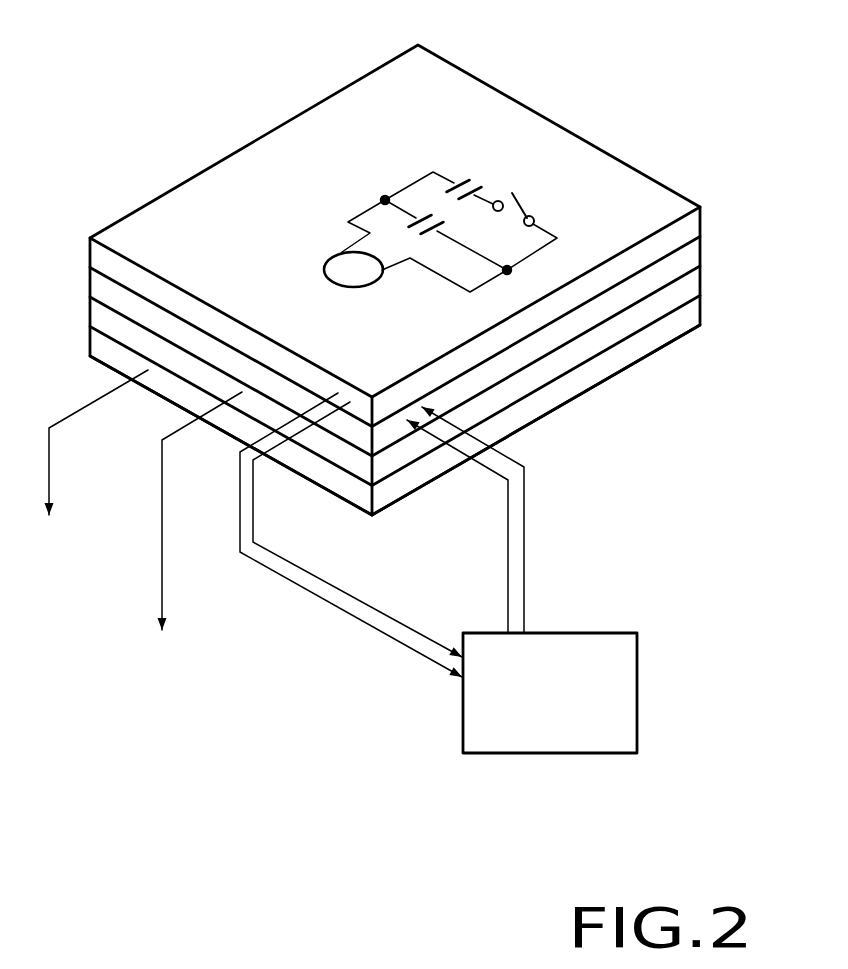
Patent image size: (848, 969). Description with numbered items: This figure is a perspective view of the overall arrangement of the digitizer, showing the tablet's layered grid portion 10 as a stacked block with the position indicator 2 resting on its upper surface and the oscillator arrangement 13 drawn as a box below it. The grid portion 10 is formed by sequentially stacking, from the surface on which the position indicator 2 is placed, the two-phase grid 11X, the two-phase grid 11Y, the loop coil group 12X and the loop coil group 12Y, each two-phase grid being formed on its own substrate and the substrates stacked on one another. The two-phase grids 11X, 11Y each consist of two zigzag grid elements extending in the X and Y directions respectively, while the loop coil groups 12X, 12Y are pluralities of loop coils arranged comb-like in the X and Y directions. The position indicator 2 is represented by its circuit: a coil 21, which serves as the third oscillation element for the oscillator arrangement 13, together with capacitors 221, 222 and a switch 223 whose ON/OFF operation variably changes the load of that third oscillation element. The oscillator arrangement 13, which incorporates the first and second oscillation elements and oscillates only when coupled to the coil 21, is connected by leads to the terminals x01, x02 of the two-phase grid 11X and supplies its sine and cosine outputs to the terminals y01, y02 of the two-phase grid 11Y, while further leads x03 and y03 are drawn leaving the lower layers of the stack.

The position indicator 2 is at (462, 180).
The grid portion 10 is at (250, 163).
The two-phase grid 11X is at (642, 258).
The two-phase grid 11Y is at (607, 312).
The loop coil group 12X is at (572, 357).
The loop coil group 12Y is at (537, 405).
The oscillator arrangement 13 is at (612, 754).
The coil 21 is at (355, 287).
The capacitor 221 is at (430, 238).
The capacitor 222 is at (473, 178).
The switch 223 is at (532, 198).
The terminal x01 is at (357, 529).
The terminal x02 is at (351, 535).
The x output line x03 is at (193, 532).
The terminal y01 is at (457, 526).
The terminal y02 is at (498, 520).
The y output line y03 is at (88, 462).